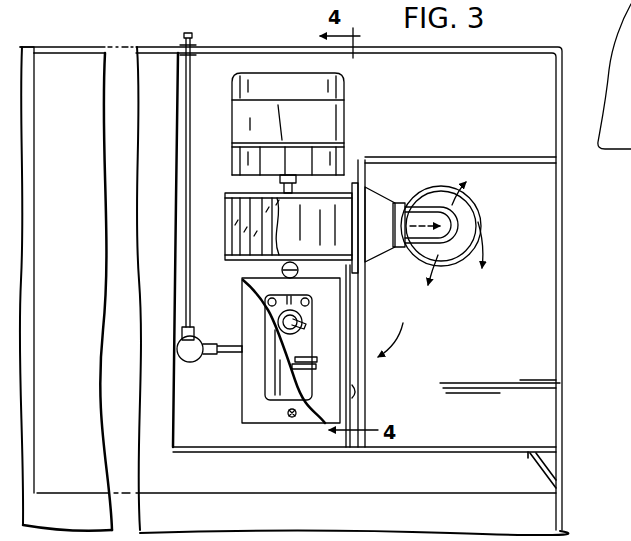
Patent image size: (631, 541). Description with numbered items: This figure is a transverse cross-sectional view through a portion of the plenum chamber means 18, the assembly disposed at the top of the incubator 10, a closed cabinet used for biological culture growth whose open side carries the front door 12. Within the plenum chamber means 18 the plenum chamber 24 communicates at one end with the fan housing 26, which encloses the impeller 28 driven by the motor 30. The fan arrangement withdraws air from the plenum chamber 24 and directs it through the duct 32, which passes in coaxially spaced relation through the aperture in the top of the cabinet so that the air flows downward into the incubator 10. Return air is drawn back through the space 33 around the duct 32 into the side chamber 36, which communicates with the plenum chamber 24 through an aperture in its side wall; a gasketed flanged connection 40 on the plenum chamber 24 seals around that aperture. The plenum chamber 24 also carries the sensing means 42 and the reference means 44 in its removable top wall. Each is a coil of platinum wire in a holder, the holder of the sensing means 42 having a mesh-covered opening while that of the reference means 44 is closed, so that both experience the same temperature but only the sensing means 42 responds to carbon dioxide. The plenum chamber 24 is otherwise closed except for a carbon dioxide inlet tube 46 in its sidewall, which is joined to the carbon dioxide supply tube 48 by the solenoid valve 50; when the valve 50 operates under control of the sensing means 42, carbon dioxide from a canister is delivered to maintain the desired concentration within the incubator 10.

The incubator 10 is at (560, 505).
The front door 12 is at (434, 196).
The plenum chamber means 18 is at (149, 44).
The plenum chamber 24 is at (241, 403).
The fan housing 26 is at (232, 265).
The impeller 28 is at (232, 228).
The motor 30 is at (336, 108).
The duct 32 is at (425, 242).
The space 33 is at (468, 212).
The side chamber 36 is at (390, 172).
The flanged connection 40 is at (358, 388).
The sensing means 42 is at (300, 323).
The reference means 44 is at (285, 368).
The carbon dioxide inlet tube 46 is at (238, 345).
The carbon dioxide supply tube 48 is at (192, 42).
The solenoid valve 50 is at (178, 351).